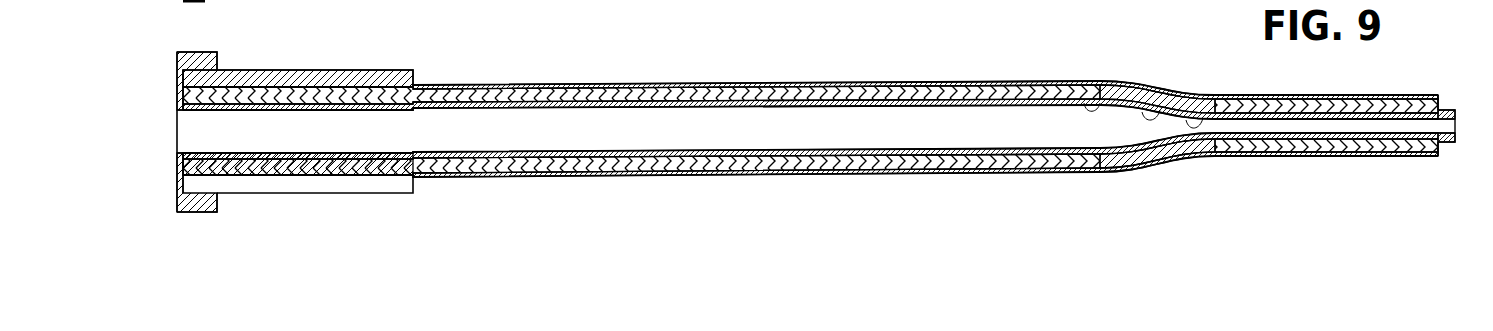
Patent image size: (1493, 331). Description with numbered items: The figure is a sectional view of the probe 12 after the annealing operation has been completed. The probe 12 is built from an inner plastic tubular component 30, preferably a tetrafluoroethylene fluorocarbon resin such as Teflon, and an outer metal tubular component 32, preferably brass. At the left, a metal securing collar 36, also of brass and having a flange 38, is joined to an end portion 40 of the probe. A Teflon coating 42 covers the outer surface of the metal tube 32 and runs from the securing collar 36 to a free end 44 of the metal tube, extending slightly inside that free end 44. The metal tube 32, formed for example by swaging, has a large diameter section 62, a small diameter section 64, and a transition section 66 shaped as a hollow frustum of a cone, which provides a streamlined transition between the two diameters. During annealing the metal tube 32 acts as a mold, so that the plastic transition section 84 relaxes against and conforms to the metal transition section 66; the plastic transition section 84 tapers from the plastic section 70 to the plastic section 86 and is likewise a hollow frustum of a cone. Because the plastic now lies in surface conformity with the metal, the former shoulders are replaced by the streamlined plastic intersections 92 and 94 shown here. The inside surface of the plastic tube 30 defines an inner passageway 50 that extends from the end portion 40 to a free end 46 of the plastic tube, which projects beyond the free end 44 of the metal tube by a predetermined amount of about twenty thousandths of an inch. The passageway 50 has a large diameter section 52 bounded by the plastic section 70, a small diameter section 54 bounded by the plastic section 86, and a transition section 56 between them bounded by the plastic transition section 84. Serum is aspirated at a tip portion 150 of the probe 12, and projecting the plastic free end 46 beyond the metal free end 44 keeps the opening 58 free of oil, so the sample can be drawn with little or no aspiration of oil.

The probe 12 is at (621, 78).
The inner plastic tubular component 30 is at (818, 110).
The outer metal tubular component 32 is at (780, 87).
The metal securing collar 36 is at (315, 72).
The flange 38 is at (216, 52).
The end portion 40 is at (176, 102).
The Teflon coating 42 is at (705, 85).
The free end of the metal tube 44 is at (1433, 99).
The free end of the plastic tube 46 is at (1442, 149).
The inner passageway 50 is at (818, 134).
The large diameter section 52 is at (546, 147).
The small diameter section 54 is at (1278, 128).
The transition section 56 is at (1143, 135).
The opening 58 is at (1456, 124).
The large diameter section 62 is at (523, 87).
The small diameter section 64 is at (1303, 98).
The transition section 66 is at (1138, 90).
The plastic section 70 is at (745, 107).
The plastic transition section 84 is at (1168, 101).
The plastic section 86 is at (1393, 116).
The streamlined plastic intersection 92 is at (1087, 96).
The streamlined plastic intersection 94 is at (1213, 102).
The tip portion 150 is at (1426, 163).